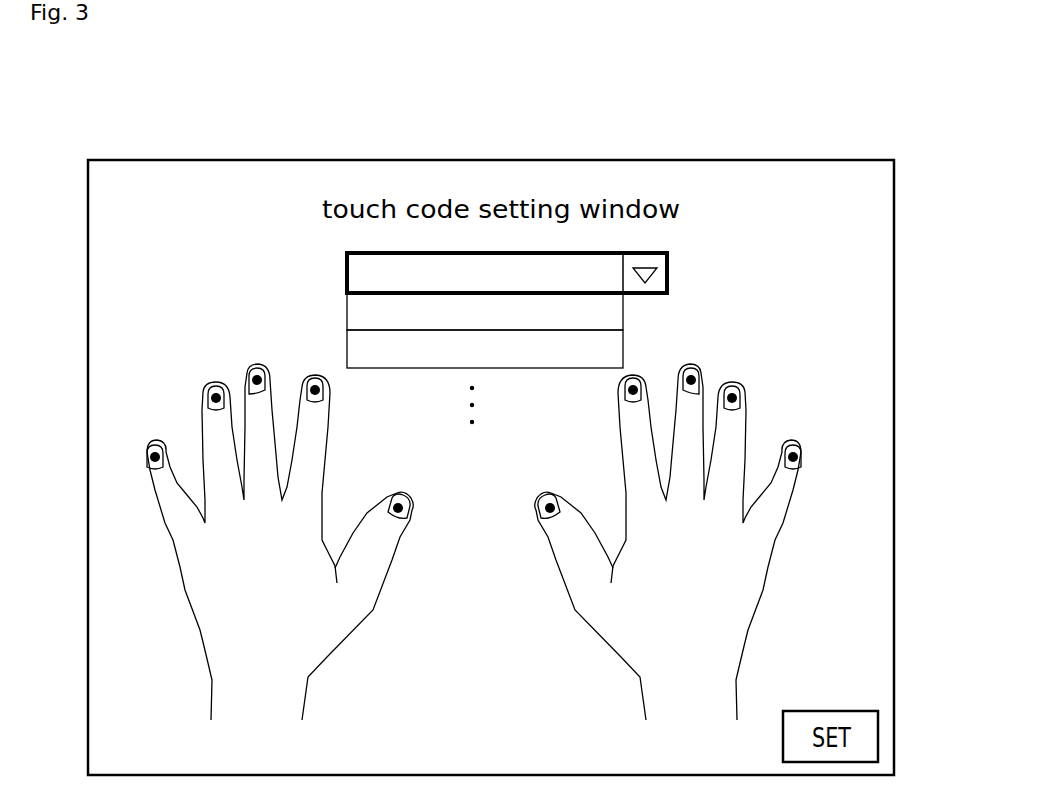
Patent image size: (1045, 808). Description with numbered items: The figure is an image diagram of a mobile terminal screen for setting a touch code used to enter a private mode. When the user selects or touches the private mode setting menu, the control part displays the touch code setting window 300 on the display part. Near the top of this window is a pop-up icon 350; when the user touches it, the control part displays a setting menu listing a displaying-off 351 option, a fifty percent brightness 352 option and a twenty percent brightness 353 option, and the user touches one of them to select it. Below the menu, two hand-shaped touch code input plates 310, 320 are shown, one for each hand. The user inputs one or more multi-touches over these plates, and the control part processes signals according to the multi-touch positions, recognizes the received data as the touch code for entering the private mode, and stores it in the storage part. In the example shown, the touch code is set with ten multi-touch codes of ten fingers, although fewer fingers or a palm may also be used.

The touch code setting window 300 is at (818, 162).
The hand-shaped touch code input plate 310 is at (200, 630).
The hand-shaped touch code input plate 320 is at (750, 627).
The pop-up icon 350 is at (667, 260).
The displaying-off 351 is at (360, 263).
The 50% brightness 352 is at (357, 311).
The 20% brightness 353 is at (357, 349).